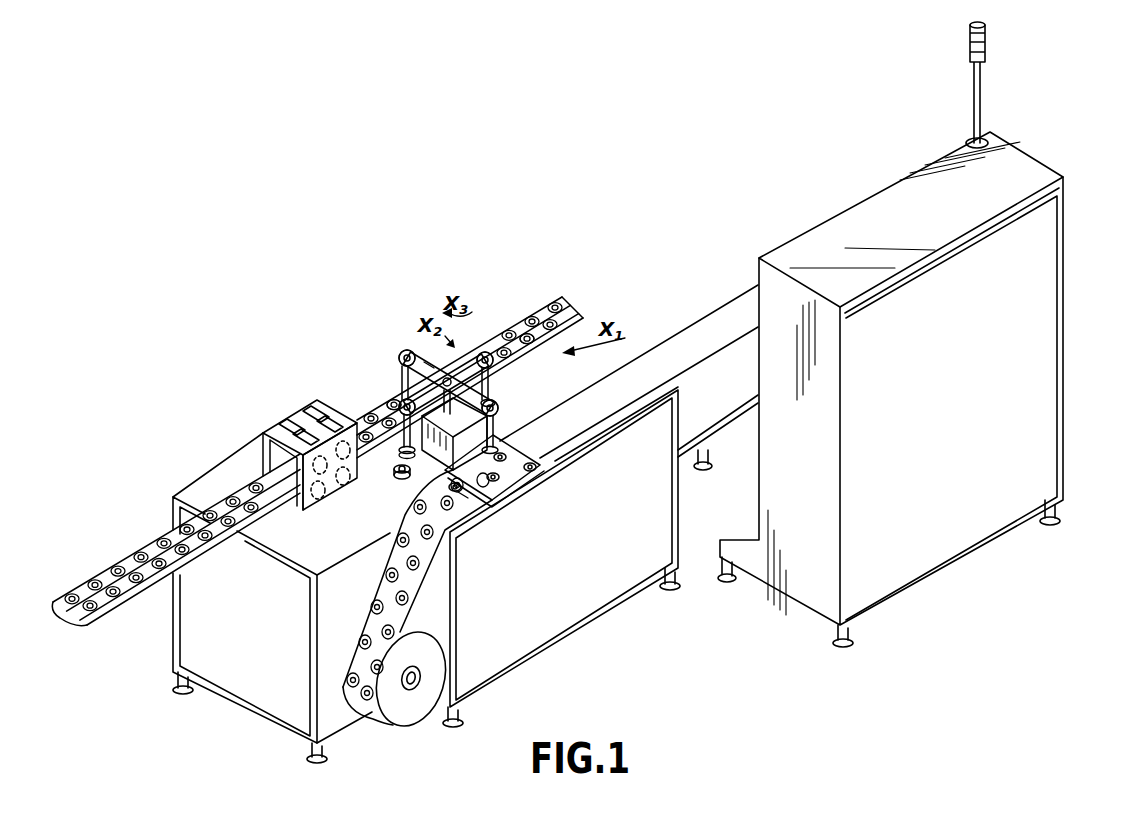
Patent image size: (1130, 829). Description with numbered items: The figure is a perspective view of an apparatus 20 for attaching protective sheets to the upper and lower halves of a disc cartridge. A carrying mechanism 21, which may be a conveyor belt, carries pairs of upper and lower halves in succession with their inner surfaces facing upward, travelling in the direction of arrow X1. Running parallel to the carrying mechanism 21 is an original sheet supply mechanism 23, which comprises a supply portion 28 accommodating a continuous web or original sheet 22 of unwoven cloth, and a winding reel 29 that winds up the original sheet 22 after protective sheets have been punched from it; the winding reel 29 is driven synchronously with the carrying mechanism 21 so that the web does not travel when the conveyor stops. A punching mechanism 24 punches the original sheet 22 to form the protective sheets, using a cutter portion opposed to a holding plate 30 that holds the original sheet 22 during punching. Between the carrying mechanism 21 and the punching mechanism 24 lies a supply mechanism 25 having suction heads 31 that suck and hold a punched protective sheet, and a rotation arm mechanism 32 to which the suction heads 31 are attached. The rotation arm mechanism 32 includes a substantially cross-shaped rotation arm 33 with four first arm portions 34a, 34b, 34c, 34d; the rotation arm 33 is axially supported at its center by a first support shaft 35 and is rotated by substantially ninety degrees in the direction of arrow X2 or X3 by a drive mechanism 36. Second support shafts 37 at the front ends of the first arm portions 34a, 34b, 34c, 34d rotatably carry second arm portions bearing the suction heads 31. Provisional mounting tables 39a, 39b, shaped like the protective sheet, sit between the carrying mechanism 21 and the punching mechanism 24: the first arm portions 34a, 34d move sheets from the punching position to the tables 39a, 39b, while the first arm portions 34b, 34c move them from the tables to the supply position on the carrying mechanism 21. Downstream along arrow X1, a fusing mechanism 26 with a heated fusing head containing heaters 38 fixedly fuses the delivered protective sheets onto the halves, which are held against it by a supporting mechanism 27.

The apparatus 20 is at (653, 191).
The carrying mechanism 21 is at (545, 306).
The original sheet 22 is at (687, 342).
The original sheet supply mechanism 23 is at (1030, 355).
The punching mechanism 24 is at (510, 502).
The supply mechanism 25 is at (517, 384).
The fusing mechanism 26 is at (333, 476).
The supporting mechanism 27 is at (312, 502).
The supply portion 28 is at (1042, 458).
The winding reel 29 is at (413, 692).
The holding plate 30 is at (513, 478).
The suction heads 31 is at (390, 399).
The rotation arm mechanism 32 is at (452, 378).
The rotation arm 33 is at (430, 365).
The first arm portion 34a is at (494, 412).
The first arm portion 34b is at (402, 403).
The first arm portion 34c is at (406, 351).
The first arm portion 34d is at (486, 357).
The first support shaft 35 is at (462, 472).
The drive mechanism 36 is at (460, 494).
The second support shafts 37 is at (403, 375).
The heaters 38 is at (398, 442).
The provisional mounting table 39a is at (400, 482).
The provisional mounting table 39b is at (500, 404).